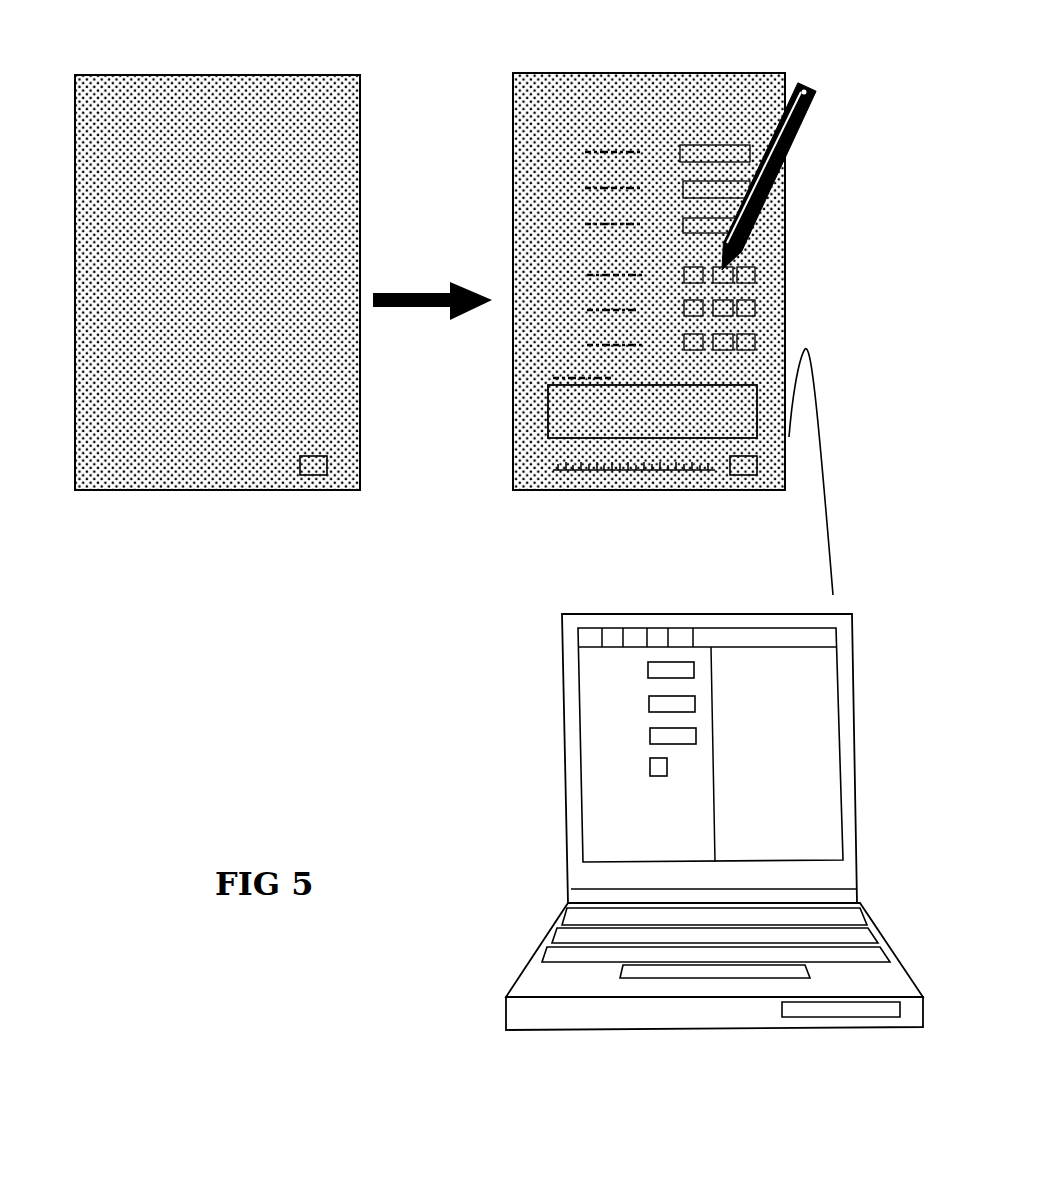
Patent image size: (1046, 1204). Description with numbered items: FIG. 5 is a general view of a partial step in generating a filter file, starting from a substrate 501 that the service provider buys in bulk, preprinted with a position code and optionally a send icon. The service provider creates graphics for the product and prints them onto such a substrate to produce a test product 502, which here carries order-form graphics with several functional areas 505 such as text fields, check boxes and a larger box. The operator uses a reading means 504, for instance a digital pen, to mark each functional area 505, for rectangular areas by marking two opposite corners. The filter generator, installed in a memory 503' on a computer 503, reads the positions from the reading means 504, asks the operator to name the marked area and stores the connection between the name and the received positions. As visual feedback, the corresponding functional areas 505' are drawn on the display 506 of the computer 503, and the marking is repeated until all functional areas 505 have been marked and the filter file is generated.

The substrate 501 is at (135, 75).
The test product 502 is at (648, 72).
The computer 503 is at (679, 843).
The memory 503' is at (851, 1037).
The reading means 504 is at (783, 152).
The functional area 505 is at (649, 350).
The corresponding functional area 505' is at (574, 719).
The display 506 is at (815, 720).